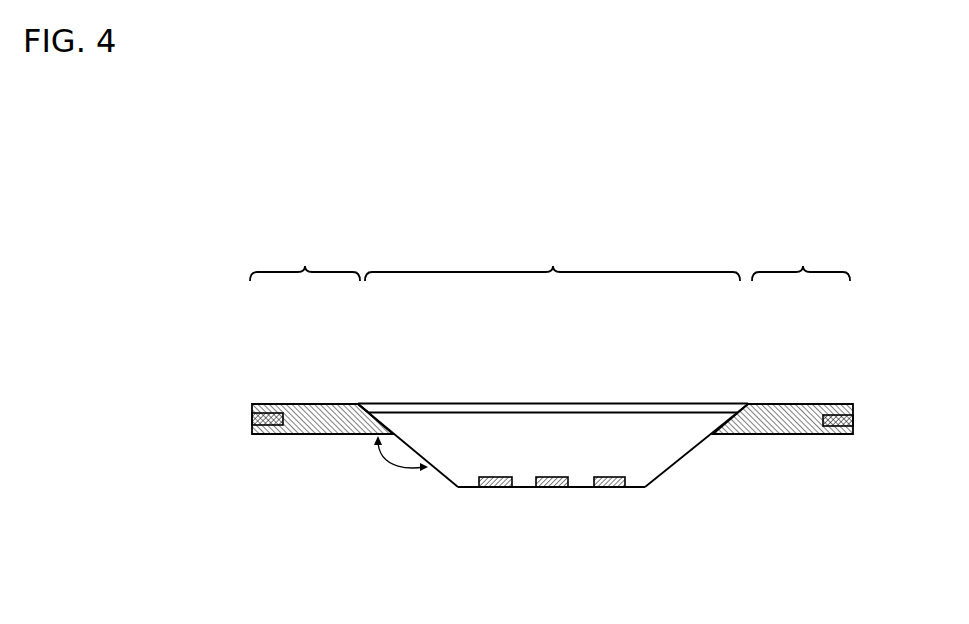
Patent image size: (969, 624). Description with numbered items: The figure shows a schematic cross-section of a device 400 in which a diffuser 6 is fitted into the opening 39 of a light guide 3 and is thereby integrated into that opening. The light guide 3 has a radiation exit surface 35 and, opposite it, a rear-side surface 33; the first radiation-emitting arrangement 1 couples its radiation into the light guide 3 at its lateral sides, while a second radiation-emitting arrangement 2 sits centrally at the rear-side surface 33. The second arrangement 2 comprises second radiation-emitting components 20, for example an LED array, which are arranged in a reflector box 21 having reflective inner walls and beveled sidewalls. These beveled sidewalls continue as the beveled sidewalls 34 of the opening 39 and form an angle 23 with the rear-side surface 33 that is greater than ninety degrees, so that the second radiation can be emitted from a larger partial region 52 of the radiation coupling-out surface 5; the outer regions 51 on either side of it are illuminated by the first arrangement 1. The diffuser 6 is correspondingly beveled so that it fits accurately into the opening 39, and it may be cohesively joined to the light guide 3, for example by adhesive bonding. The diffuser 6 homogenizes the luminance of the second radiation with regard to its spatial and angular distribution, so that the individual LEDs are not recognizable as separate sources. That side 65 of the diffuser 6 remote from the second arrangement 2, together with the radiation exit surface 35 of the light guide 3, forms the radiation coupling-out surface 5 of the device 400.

The device 400 is at (377, 97).
The first radiation-emitting arrangement 1 is at (273, 423).
The second radiation-emitting arrangement 2 is at (517, 468).
The light guide 3 is at (322, 409).
The radiation coupling-out surface 5 is at (790, 404).
The diffuser 6 is at (640, 410).
The second radiation-emitting components 20 is at (613, 490).
The reflector box 21 is at (672, 468).
The angle 23 is at (383, 462).
The rear-side surface 33 is at (297, 436).
The beveled sidewalls of the opening 34 is at (369, 405).
The radiation exit surface 35 is at (813, 404).
The opening 39 is at (535, 427).
The outer region 51 is at (305, 262).
The partial region 52 is at (553, 262).
The side of the diffuser remote from the second radiation-emitting arrangement 65 is at (680, 404).